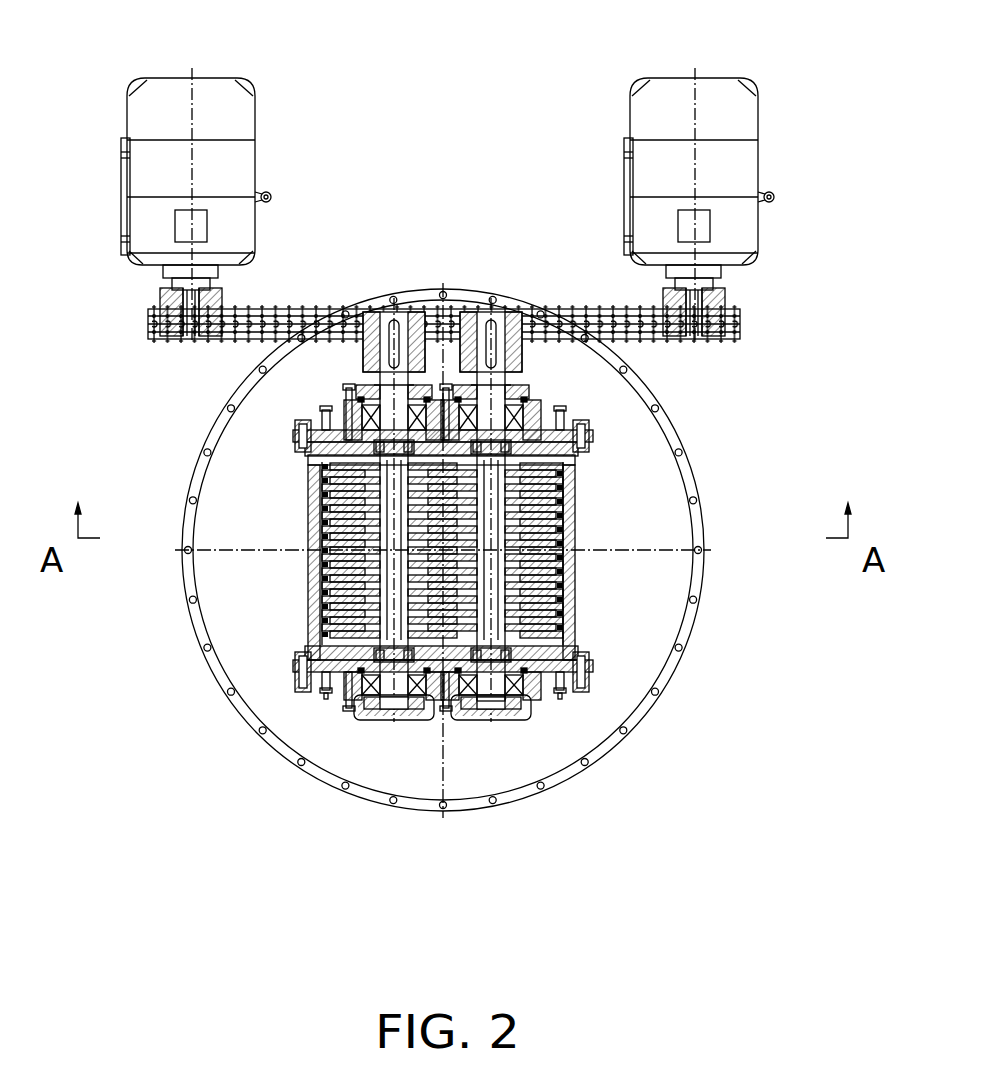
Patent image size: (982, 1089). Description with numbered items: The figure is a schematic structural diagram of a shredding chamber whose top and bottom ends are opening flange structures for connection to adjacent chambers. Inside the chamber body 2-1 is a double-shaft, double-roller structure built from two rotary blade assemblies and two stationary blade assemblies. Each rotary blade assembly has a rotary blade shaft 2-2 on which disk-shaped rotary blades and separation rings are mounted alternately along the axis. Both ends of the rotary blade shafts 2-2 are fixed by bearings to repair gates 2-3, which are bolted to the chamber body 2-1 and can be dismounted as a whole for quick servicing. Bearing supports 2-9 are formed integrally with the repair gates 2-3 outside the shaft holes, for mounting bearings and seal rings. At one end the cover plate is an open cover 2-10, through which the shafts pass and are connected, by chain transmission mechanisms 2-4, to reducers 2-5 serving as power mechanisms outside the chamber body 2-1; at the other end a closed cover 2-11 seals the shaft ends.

The chamber body 2-1 is at (583, 600).
The rotary blade shaft 2-2 is at (528, 707).
The repair gate 2-3 is at (338, 688).
The chain transmission mechanism 2-4 is at (237, 340).
The reducer 2-5 is at (200, 92).
The bearing support 2-9 is at (442, 688).
The open cover 2-10 is at (540, 393).
The closed cover 2-11 is at (495, 698).